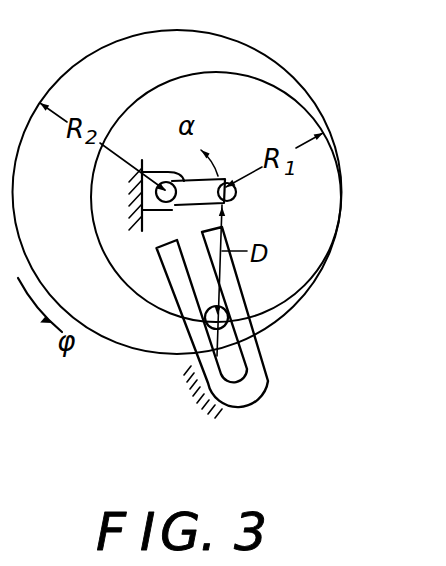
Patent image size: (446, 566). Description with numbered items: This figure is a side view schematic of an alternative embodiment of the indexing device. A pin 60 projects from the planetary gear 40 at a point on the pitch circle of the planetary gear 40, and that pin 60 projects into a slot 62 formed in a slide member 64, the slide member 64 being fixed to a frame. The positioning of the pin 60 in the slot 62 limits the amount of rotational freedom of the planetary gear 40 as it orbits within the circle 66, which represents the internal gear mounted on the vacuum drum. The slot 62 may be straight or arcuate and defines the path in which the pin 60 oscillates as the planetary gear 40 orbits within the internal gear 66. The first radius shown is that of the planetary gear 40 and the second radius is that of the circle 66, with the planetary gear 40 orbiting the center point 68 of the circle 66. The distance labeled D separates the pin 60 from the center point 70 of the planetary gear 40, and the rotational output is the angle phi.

The planetary gear 40 is at (303, 221).
The pin 60 is at (227, 328).
The slot 62 is at (205, 284).
The slide member 64 is at (256, 385).
The circle 66 is at (291, 68).
The center point 68 is at (167, 203).
The center point 70 is at (226, 178).